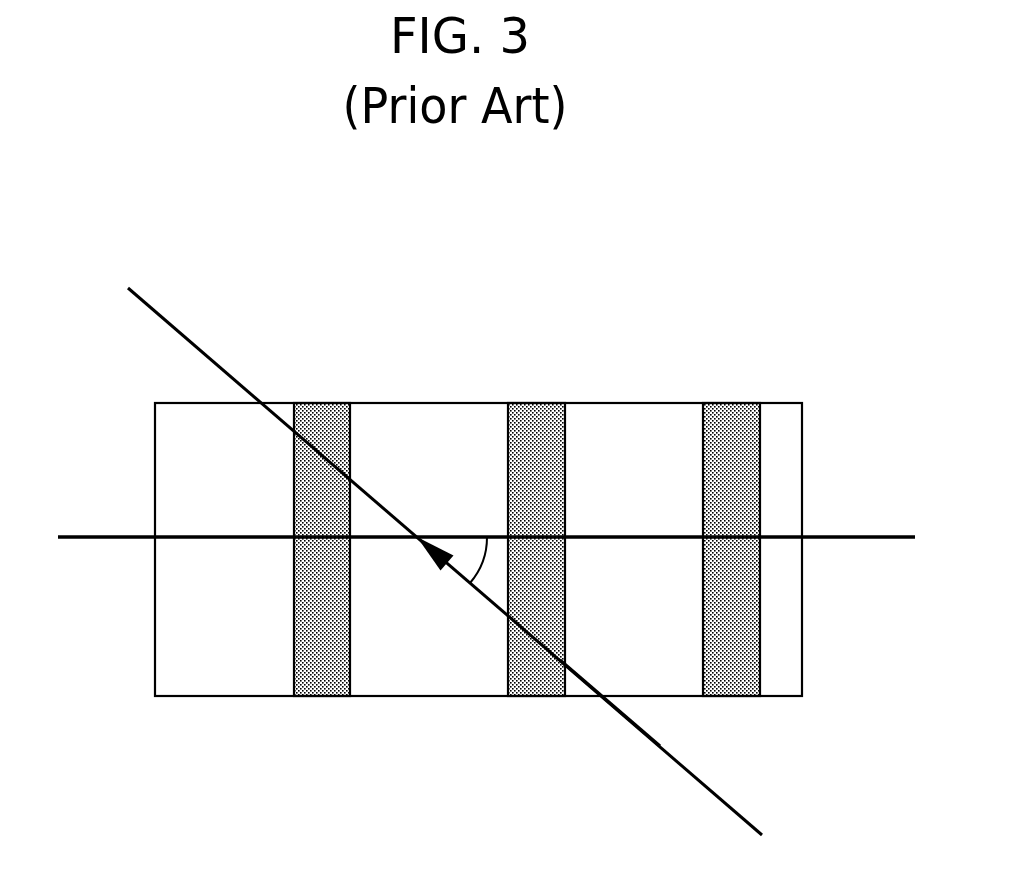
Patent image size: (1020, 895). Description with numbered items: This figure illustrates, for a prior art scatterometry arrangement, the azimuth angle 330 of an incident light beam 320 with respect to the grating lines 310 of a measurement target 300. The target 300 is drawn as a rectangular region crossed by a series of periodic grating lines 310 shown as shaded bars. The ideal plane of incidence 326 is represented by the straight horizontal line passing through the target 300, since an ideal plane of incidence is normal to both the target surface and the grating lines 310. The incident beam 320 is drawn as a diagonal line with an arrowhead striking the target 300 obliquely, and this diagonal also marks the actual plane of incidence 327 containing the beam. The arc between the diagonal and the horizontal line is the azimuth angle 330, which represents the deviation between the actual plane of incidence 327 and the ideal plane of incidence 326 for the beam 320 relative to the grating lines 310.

The measurement target 300 is at (680, 340).
The grating lines 310 is at (565, 427).
The ideal plane of incidence 326 is at (88, 535).
The incident light beam 320 is at (638, 730).
The actual plane of incidence 327 is at (608, 722).
The azimuth angle 330 is at (489, 570).